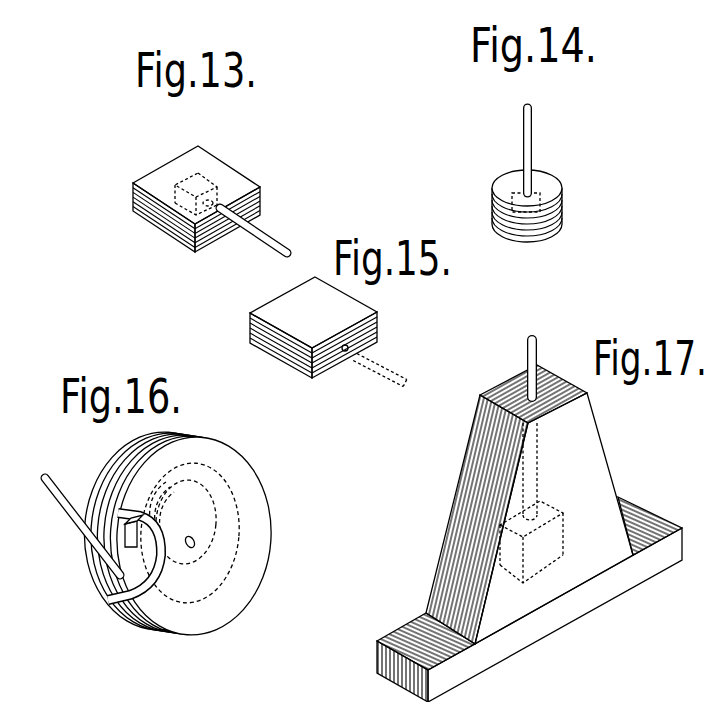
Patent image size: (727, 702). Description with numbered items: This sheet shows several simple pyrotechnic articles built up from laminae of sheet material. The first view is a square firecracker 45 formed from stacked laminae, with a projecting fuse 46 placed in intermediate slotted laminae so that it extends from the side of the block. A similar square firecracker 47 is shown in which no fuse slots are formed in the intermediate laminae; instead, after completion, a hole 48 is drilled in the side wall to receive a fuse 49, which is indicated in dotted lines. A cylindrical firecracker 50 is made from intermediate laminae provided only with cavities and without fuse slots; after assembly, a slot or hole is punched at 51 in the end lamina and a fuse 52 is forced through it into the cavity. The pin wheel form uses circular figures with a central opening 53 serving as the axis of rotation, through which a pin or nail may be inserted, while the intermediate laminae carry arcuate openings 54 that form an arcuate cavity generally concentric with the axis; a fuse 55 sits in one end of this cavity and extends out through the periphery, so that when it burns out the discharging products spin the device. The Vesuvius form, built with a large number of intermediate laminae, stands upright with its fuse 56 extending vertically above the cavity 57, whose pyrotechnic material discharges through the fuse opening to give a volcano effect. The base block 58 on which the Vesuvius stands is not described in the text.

In FIG. 13, the square firecracker 45 is at (240, 180).
In FIG. 13, the projecting fuse 46 is at (267, 233).
In FIG. 15, the square firecracker 47 is at (365, 308).
In FIG. 15, the hole 48 is at (345, 353).
In FIG. 15, the fuse 49 is at (383, 367).
In FIG. 14, the cylindrical firecracker 50 is at (557, 187).
In FIG. 14, the slot or hole 51 is at (530, 193).
In FIG. 14, the fuse 52 is at (532, 130).
In FIG. 16, the central opening 53 is at (193, 538).
In FIG. 16, the arcuate openings 54 is at (230, 520).
In FIG. 16, the fuse 55 is at (66, 513).
In FIG. 17, the fuse 56 is at (538, 348).
In FIG. 17, the cavity 57 is at (572, 525).
In FIG. 17, the base block 58 is at (529, 533).